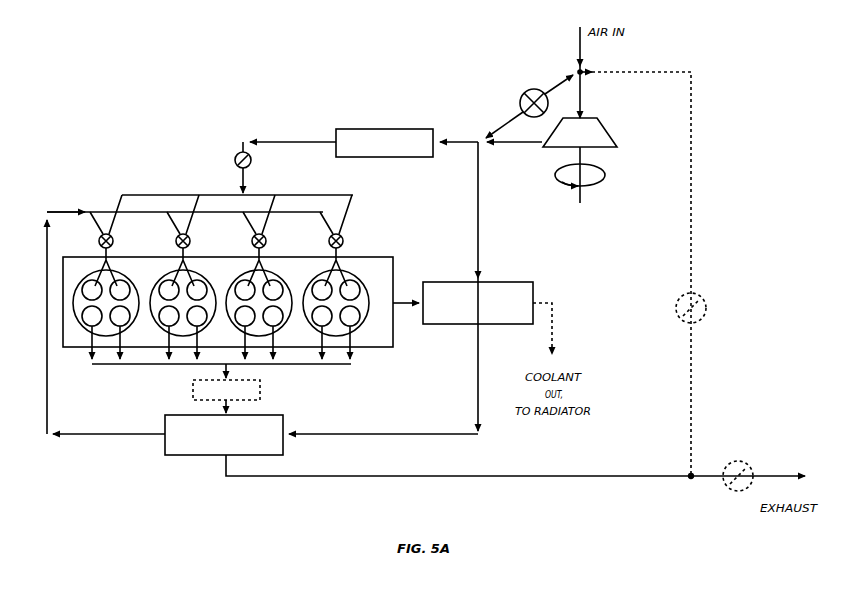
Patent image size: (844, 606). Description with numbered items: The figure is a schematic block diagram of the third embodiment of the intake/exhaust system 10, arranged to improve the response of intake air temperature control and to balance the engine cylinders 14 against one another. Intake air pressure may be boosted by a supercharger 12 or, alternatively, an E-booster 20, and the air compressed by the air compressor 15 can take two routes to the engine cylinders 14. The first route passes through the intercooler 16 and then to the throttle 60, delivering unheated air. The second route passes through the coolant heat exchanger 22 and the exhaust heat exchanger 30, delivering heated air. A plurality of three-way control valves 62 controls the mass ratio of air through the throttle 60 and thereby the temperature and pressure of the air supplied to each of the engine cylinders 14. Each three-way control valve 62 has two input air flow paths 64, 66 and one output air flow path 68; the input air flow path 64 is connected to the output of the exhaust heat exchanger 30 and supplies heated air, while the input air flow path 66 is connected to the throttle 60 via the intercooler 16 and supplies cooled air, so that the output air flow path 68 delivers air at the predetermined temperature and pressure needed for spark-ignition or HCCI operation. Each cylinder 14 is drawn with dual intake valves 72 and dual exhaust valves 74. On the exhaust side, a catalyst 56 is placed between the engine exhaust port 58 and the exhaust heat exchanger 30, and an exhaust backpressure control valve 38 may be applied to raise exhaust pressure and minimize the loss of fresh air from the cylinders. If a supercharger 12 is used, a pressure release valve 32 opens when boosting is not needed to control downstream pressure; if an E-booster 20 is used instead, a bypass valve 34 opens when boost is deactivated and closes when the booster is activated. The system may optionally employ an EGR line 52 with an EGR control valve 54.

The intake/exhaust system 10 is at (787, 54).
The supercharger 12 is at (580, 186).
The E-booster 20 is at (580, 186).
The air compressor 15 is at (604, 148).
The intercooler 16 is at (395, 129).
The coolant heat exchanger 22 is at (497, 283).
The exhaust heat exchanger 30 is at (190, 456).
The pressure release valve 32 is at (529, 102).
The bypass valve 34 is at (527, 91).
The exhaust backpressure control valve 38 is at (738, 492).
The EGR line 52 is at (693, 182).
The EGR control valve 54 is at (702, 318).
The catalyst 56 is at (261, 395).
The engine exhaust port 58 is at (219, 368).
The throttle 60 is at (239, 154).
The three-way control valves 62 is at (99, 243).
The input air flow path 64 is at (98, 229).
The input air flow path 66 is at (119, 212).
The output air flow path 68 is at (110, 252).
The engine cylinders 14 is at (74, 303).
The intake valves 72 is at (86, 289).
The exhaust valves 74 is at (84, 316).